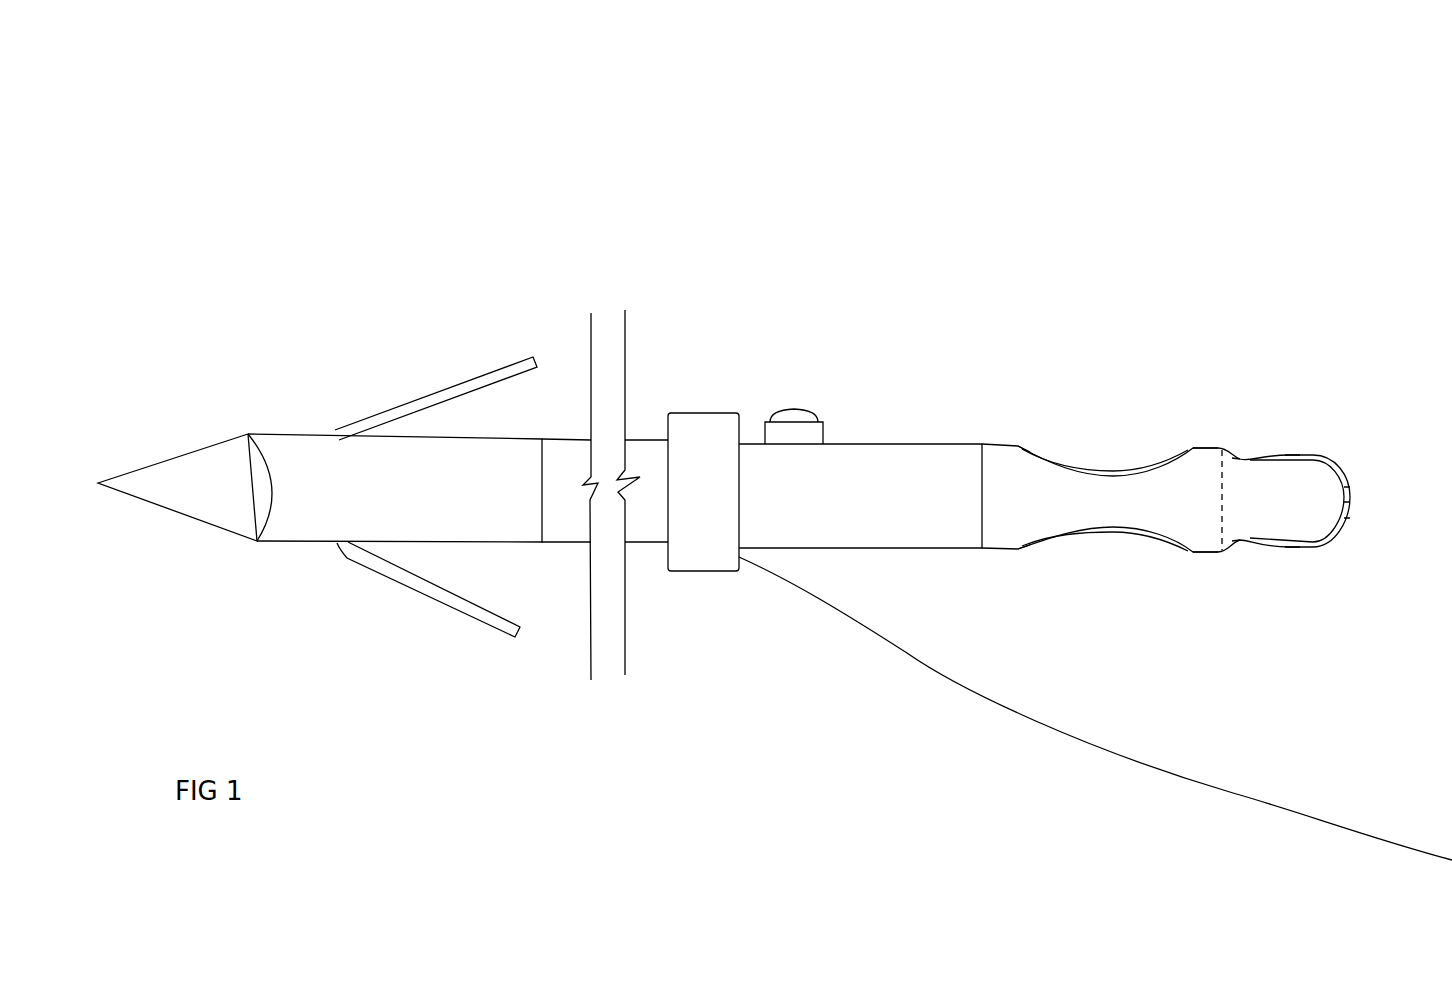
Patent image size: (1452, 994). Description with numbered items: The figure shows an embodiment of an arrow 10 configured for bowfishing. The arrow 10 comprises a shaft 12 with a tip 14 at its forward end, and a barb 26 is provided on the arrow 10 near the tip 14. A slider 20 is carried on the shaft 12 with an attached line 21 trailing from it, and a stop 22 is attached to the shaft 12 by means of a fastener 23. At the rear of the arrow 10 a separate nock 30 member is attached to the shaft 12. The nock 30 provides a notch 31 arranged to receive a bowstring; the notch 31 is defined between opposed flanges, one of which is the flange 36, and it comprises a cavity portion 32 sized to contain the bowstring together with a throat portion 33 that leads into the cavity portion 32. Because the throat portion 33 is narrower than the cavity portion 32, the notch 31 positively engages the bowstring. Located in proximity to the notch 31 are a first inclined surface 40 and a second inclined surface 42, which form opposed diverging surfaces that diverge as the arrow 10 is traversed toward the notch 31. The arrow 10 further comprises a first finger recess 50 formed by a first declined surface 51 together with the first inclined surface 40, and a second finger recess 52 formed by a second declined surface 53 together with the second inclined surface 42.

The arrow 10 is at (349, 184).
The shaft 12 is at (868, 455).
The tip 14 is at (131, 480).
The slider 20 is at (700, 563).
The line 21 is at (965, 690).
The stop 22 is at (813, 433).
The fastener 23 is at (788, 415).
The barb 26 is at (400, 587).
The nock 30 is at (1010, 527).
The notch 31 is at (1283, 443).
The cavity portion 32 is at (1251, 565).
The throat portion 33 is at (1304, 563).
The flange 36 is at (1320, 490).
The first inclined surface 40 is at (1173, 452).
The second inclined surface 42 is at (1173, 547).
The first finger recess 50 is at (1113, 463).
The first declined surface 51 is at (1040, 445).
The second finger recess 52 is at (1117, 528).
The second declined surface 53 is at (1048, 547).